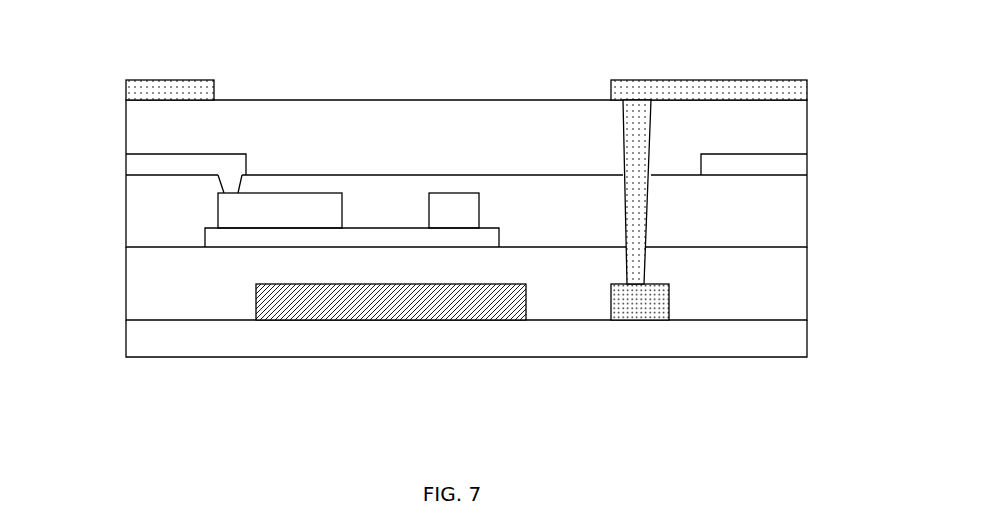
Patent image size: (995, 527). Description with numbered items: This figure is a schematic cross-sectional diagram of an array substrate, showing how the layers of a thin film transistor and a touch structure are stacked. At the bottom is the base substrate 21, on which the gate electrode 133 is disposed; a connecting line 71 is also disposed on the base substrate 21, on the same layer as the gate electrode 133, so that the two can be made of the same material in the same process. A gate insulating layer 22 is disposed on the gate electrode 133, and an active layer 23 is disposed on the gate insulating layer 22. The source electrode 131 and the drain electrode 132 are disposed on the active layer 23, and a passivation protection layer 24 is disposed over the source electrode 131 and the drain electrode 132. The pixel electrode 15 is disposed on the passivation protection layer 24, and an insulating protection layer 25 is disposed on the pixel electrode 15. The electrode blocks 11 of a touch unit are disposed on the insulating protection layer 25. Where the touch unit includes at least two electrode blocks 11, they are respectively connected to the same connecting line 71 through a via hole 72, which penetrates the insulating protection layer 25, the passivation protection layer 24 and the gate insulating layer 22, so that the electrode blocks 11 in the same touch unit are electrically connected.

The electrode block 11 is at (805, 91).
The insulating protection layer 25 is at (797, 131).
The pixel electrode 15 is at (137, 163).
The via hole 72 is at (648, 199).
The passivation protection layer 24 is at (795, 234).
The gate insulating layer 22 is at (795, 291).
The base substrate 21 is at (795, 347).
The active layer 23 is at (213, 237).
The source electrode 131 is at (319, 208).
The drain electrode 132 is at (466, 203).
The gate electrode 133 is at (331, 312).
The connecting line 71 is at (642, 312).